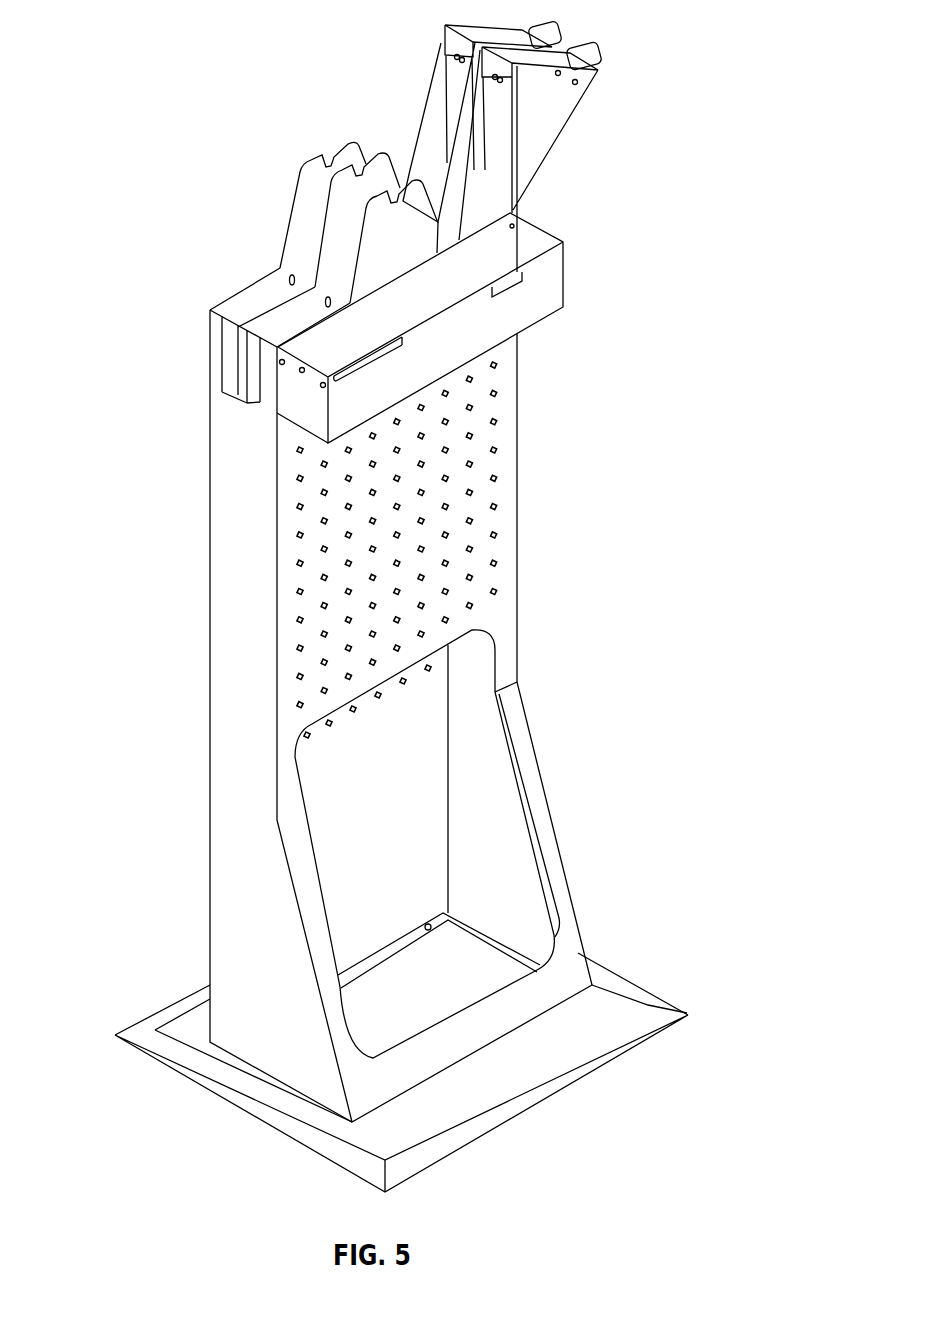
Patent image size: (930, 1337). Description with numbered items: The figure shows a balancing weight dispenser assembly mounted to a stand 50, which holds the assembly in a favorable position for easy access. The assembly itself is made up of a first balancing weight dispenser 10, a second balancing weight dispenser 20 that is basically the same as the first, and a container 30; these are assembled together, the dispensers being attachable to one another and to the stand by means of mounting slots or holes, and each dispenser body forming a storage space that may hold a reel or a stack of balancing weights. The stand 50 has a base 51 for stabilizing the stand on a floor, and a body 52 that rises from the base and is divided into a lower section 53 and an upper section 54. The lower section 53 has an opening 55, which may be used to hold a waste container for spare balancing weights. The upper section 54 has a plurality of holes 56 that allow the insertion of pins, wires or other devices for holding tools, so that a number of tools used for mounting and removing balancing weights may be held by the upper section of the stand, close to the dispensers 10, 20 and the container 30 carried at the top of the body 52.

The first balancing weight dispenser 10 is at (218, 363).
The second balancing weight dispenser 20 is at (266, 406).
The container 30 is at (549, 284).
The stand 50 is at (370, 730).
The base 51 is at (524, 1095).
The body 52 is at (245, 650).
The lower section 53 is at (280, 1041).
The upper section 54 is at (247, 454).
The opening 55 is at (487, 808).
The holes 56 is at (493, 513).